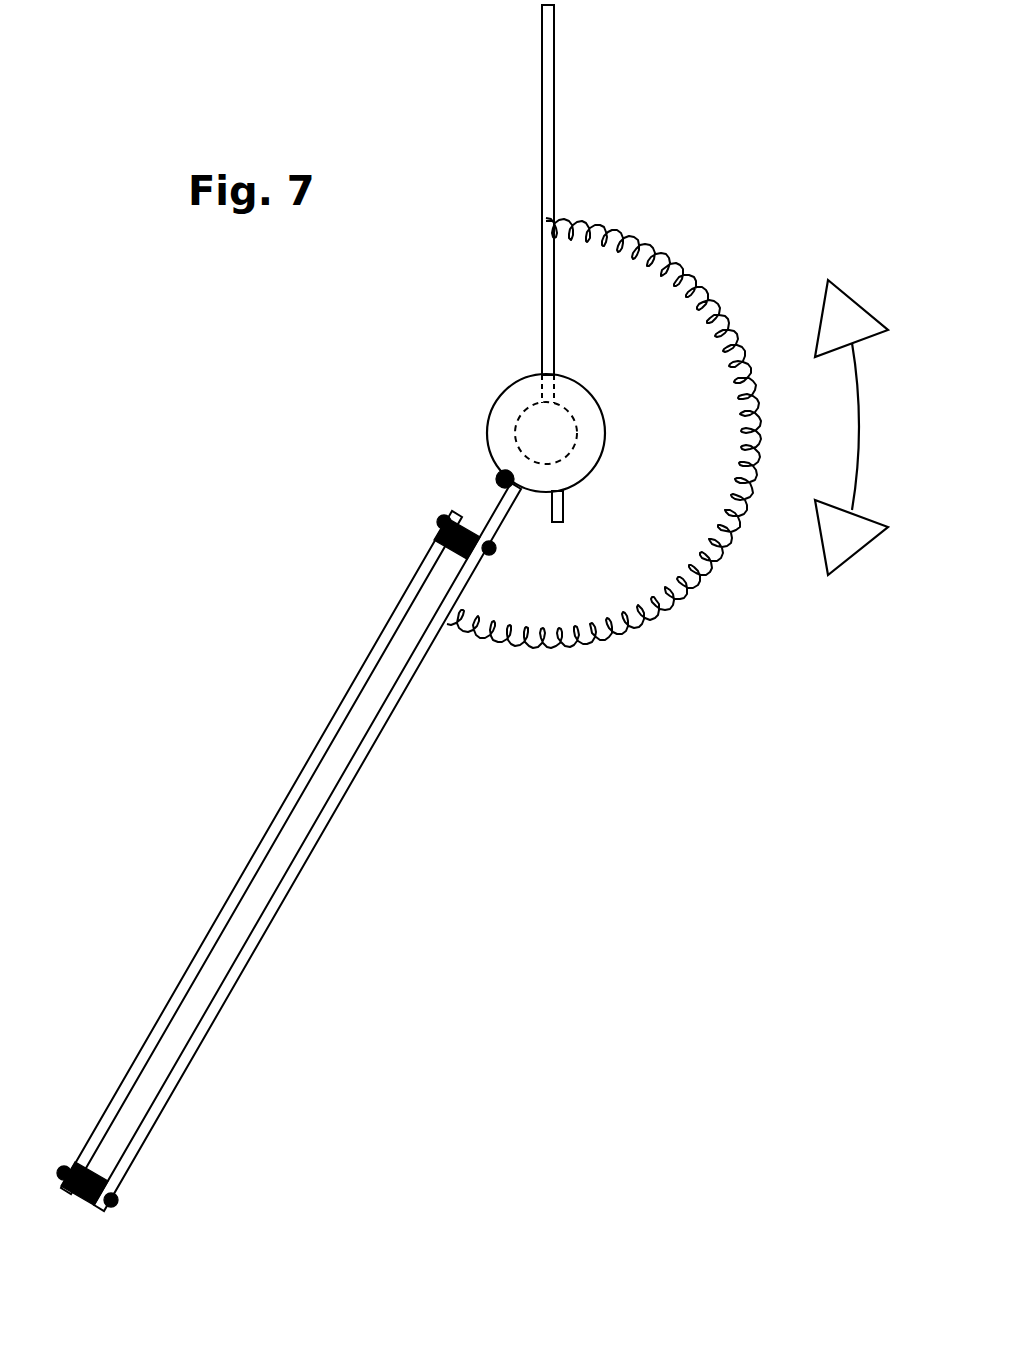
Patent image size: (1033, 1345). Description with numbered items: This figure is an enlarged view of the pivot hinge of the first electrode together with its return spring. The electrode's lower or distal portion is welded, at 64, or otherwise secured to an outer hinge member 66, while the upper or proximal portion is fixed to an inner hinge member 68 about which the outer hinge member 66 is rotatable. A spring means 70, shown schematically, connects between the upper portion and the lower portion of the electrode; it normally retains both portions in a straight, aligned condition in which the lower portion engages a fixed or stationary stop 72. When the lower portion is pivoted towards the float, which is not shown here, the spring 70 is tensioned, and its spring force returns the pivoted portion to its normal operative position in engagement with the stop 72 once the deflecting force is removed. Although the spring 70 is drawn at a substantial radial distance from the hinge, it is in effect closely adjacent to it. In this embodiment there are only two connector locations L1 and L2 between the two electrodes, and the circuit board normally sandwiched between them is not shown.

The weld 64 is at (503, 478).
The outer hinge member 66 is at (511, 412).
The inner hinge member 68 is at (558, 423).
The spring means 70 is at (712, 292).
The stop 72 is at (566, 509).
The connector location L1 is at (445, 522).
The connector location L2 is at (112, 1200).